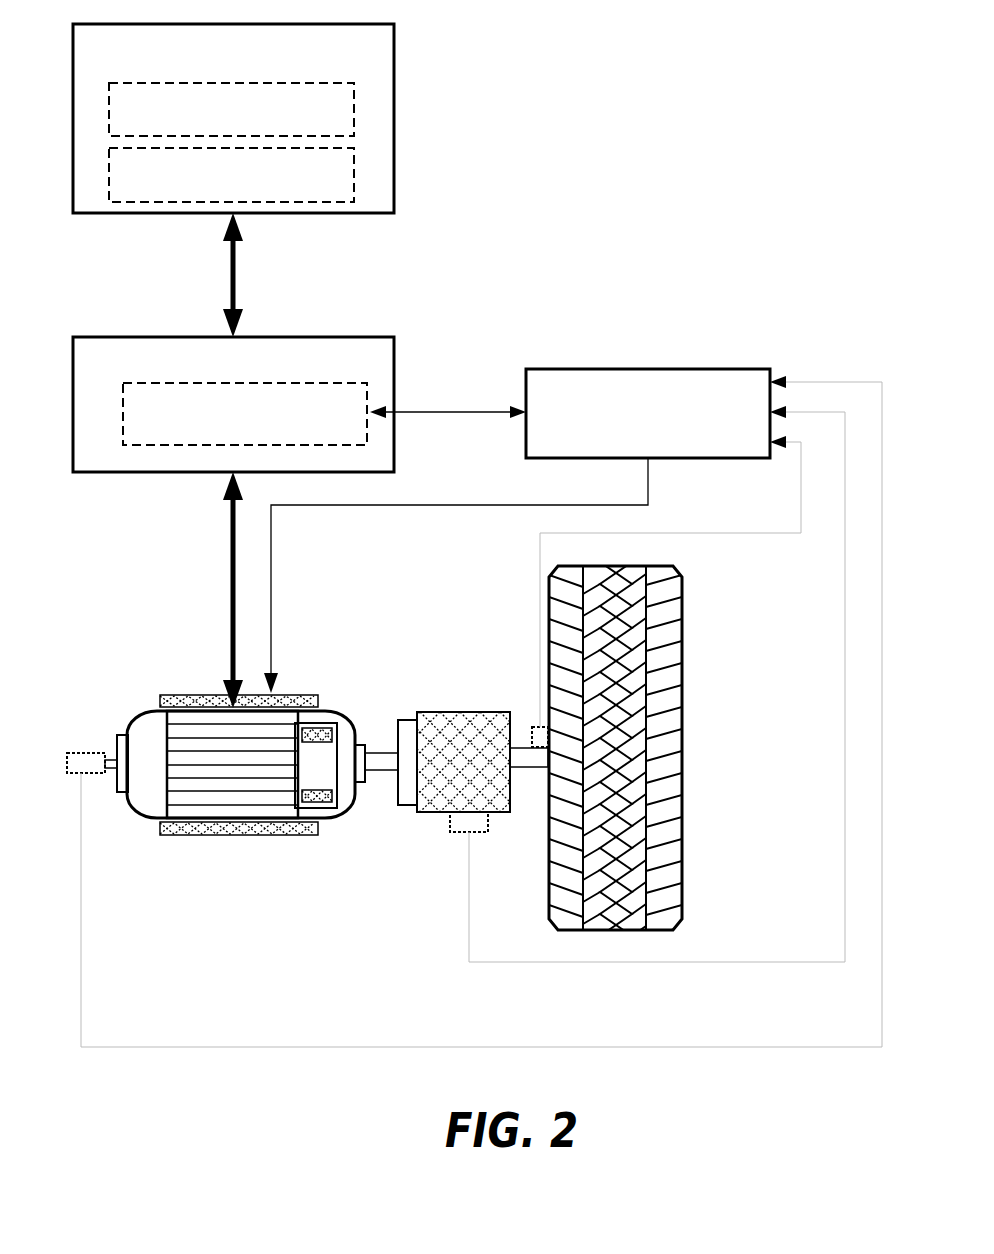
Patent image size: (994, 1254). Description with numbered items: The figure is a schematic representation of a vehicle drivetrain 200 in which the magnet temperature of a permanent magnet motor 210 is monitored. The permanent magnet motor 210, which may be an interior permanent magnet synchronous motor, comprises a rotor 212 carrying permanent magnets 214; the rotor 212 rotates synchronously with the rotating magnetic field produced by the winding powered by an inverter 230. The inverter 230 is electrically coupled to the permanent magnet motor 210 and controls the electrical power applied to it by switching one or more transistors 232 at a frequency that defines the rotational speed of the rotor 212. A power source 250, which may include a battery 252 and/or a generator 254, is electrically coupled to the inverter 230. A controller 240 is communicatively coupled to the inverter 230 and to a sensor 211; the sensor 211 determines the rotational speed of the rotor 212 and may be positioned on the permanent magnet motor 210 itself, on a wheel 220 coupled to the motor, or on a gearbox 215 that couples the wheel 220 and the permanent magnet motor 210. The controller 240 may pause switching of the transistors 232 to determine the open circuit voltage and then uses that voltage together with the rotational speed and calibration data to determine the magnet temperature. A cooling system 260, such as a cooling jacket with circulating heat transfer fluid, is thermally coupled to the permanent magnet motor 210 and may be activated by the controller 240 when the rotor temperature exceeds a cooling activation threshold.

The vehicle drivetrain 200 is at (579, 163).
The permanent magnet motor 210 is at (228, 856).
The sensor 211 is at (75, 753).
The rotor 212 is at (323, 723).
The permanent magnets 214 is at (323, 808).
The gearbox 215 is at (430, 812).
The wheel 220 is at (683, 782).
The inverter 230 is at (298, 376).
The transistors 232 is at (340, 426).
The controller 240 is at (667, 439).
The power source 250 is at (336, 62).
The battery 252 is at (295, 120).
The generator 254 is at (311, 187).
The cooling system 260 is at (188, 698).